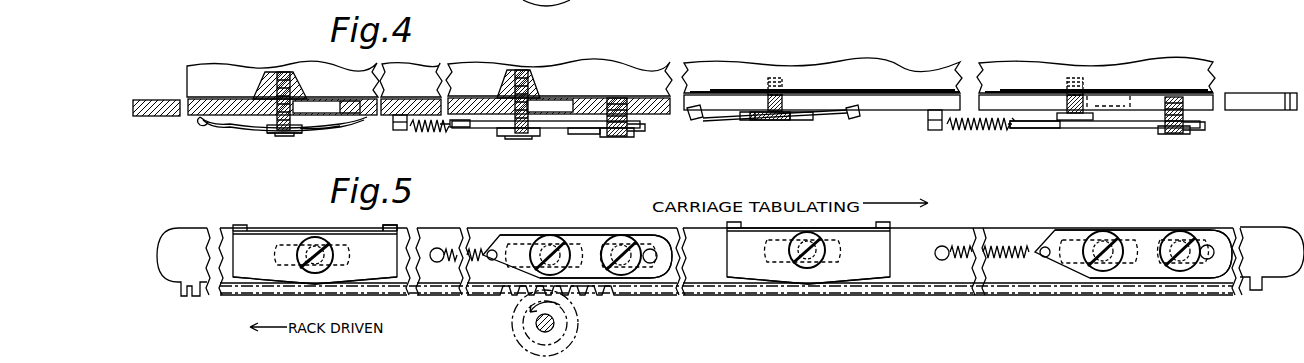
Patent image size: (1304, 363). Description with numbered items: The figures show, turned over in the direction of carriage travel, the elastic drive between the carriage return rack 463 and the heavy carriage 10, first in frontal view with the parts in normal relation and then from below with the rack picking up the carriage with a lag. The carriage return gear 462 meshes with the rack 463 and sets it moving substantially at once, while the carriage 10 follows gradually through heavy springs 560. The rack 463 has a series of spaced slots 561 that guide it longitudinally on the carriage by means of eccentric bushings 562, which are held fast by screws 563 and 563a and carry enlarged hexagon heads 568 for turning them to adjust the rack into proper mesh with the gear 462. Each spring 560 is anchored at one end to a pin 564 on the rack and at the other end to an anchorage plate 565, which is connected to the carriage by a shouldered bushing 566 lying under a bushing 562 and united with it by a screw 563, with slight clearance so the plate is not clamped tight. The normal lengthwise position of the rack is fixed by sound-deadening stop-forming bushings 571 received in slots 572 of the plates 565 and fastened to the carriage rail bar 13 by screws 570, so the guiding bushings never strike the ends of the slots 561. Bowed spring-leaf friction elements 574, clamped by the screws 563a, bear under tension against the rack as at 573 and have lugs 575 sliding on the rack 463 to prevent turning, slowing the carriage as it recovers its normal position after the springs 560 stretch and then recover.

In FIG. 4, the carriage 10 is at (915, 45).
In FIG. 5, the carriage 10 is at (623, 355).
In FIG. 4, the carriage rail bar 13 is at (712, 63).
In FIG. 5, the carriage return gear 462 is at (520, 310).
In FIG. 4, the carriage return rack 463 is at (660, 96).
In FIG. 5, the carriage return rack 463 is at (700, 285).
In FIG. 4, the springs 560 is at (418, 133).
In FIG. 5, the springs 560 is at (472, 245).
In FIG. 4, the slots 561 is at (340, 91).
In FIG. 5, the slots 561 is at (292, 222).
In FIG. 4, the bushings 562 is at (308, 56).
In FIG. 5, the bushings 562 is at (805, 268).
In FIG. 4, the screws 563 is at (490, 128).
In FIG. 5, the screws 563 is at (548, 235).
In FIG. 4, the screws 563a is at (283, 133).
In FIG. 5, the screws 563a is at (328, 224).
In FIG. 4, the pin 564 is at (392, 124).
In FIG. 5, the pin 564 is at (437, 262).
In FIG. 4, the anchorage plate 565 is at (555, 130).
In FIG. 5, the anchorage plate 565 is at (590, 235).
In FIG. 4, the shouldered bushing 566 is at (540, 140).
In FIG. 5, the shouldered bushing 566 is at (568, 245).
In FIG. 4, the hexagon heads 568 is at (318, 129).
In FIG. 4, the screws 570 is at (630, 140).
In FIG. 5, the screws 570 is at (628, 275).
In FIG. 4, the stop-forming bushings 571 is at (645, 128).
In FIG. 5, the stop-forming bushings 571 is at (648, 240).
In FIG. 4, the slots 572 is at (585, 134).
In FIG. 5, the slots 572 is at (645, 270).
In FIG. 4, the bearing point 573 is at (222, 125).
In FIG. 5, the bearing point 573 is at (245, 232).
In FIG. 4, the friction elements 574 is at (795, 117).
In FIG. 5, the friction elements 574 is at (278, 280).
In FIG. 4, the lugs 575 is at (197, 121).
In FIG. 5, the lugs 575 is at (390, 230).